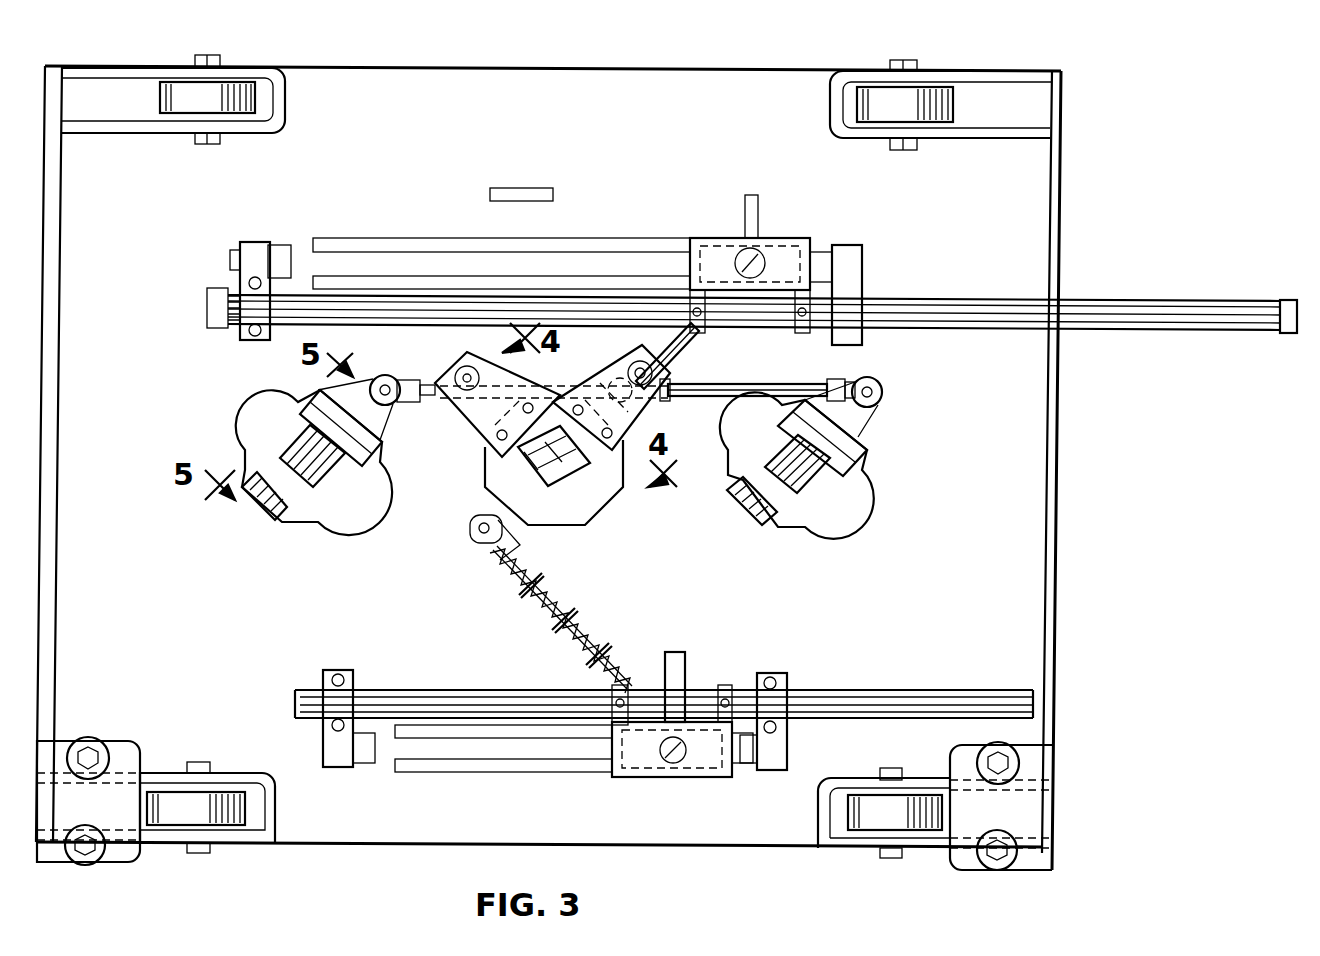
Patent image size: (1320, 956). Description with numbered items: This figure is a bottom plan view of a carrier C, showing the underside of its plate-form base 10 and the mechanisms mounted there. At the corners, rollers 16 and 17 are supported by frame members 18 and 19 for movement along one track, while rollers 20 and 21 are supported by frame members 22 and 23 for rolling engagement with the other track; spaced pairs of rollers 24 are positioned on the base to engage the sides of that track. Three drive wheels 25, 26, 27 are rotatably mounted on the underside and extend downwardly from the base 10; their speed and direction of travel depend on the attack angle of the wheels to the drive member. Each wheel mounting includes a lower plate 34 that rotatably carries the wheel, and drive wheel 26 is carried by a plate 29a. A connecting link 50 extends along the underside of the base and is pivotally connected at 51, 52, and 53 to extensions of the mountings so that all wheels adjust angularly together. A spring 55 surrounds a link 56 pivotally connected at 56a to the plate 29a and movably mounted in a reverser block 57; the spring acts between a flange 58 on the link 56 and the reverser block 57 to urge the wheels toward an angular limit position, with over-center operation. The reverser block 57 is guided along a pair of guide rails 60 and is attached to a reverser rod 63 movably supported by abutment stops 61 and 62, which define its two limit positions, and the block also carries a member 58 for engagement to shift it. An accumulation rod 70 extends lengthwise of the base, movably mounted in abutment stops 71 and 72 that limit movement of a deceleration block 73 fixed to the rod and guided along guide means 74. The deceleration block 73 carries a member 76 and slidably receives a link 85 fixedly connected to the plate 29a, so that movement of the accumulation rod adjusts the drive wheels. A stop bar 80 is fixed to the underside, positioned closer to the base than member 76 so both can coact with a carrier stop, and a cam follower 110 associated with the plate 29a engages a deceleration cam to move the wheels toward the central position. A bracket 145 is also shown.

The carrier C is at (1063, 466).
The base 10 is at (935, 550).
The roller 16 is at (243, 117).
The roller 17 is at (878, 120).
The frame member 18 is at (128, 133).
The frame member 19 is at (997, 142).
The roller 20 is at (232, 790).
The roller 21 is at (872, 805).
The frame member 22 is at (275, 802).
The frame member 23 is at (820, 798).
The rollers 24 is at (96, 748).
The drive wheel 25 is at (320, 512).
The drive wheel 26 is at (573, 510).
The drive wheel 27 is at (810, 510).
The plate 29a is at (600, 503).
The lower plate 34 is at (360, 508).
The connecting link 50 is at (725, 384).
The pivot connection 51 is at (380, 384).
The pivot connection 52 is at (612, 373).
The pivot connection 53 is at (884, 392).
The spring 55 is at (600, 628).
The link 56 is at (545, 605).
The pivot connection 56a is at (470, 545).
The reverser block 57 is at (660, 766).
The flange 58 is at (512, 535).
The guide rails 60 is at (510, 768).
The abutment stop 61 is at (352, 674).
The abutment stop 62 is at (788, 674).
The reverser rod 63 is at (888, 690).
The accumulation rod 70 is at (1145, 305).
The abutment stop 71 is at (858, 272).
The abutment stop 72 is at (258, 248).
The deceleration block 73 is at (712, 240).
The guide means 74 is at (600, 278).
The member 76 is at (758, 205).
The stop bar 80 is at (548, 186).
The link 85 is at (675, 352).
The cam follower 110 is at (467, 366).
The bracket 145 is at (676, 392).